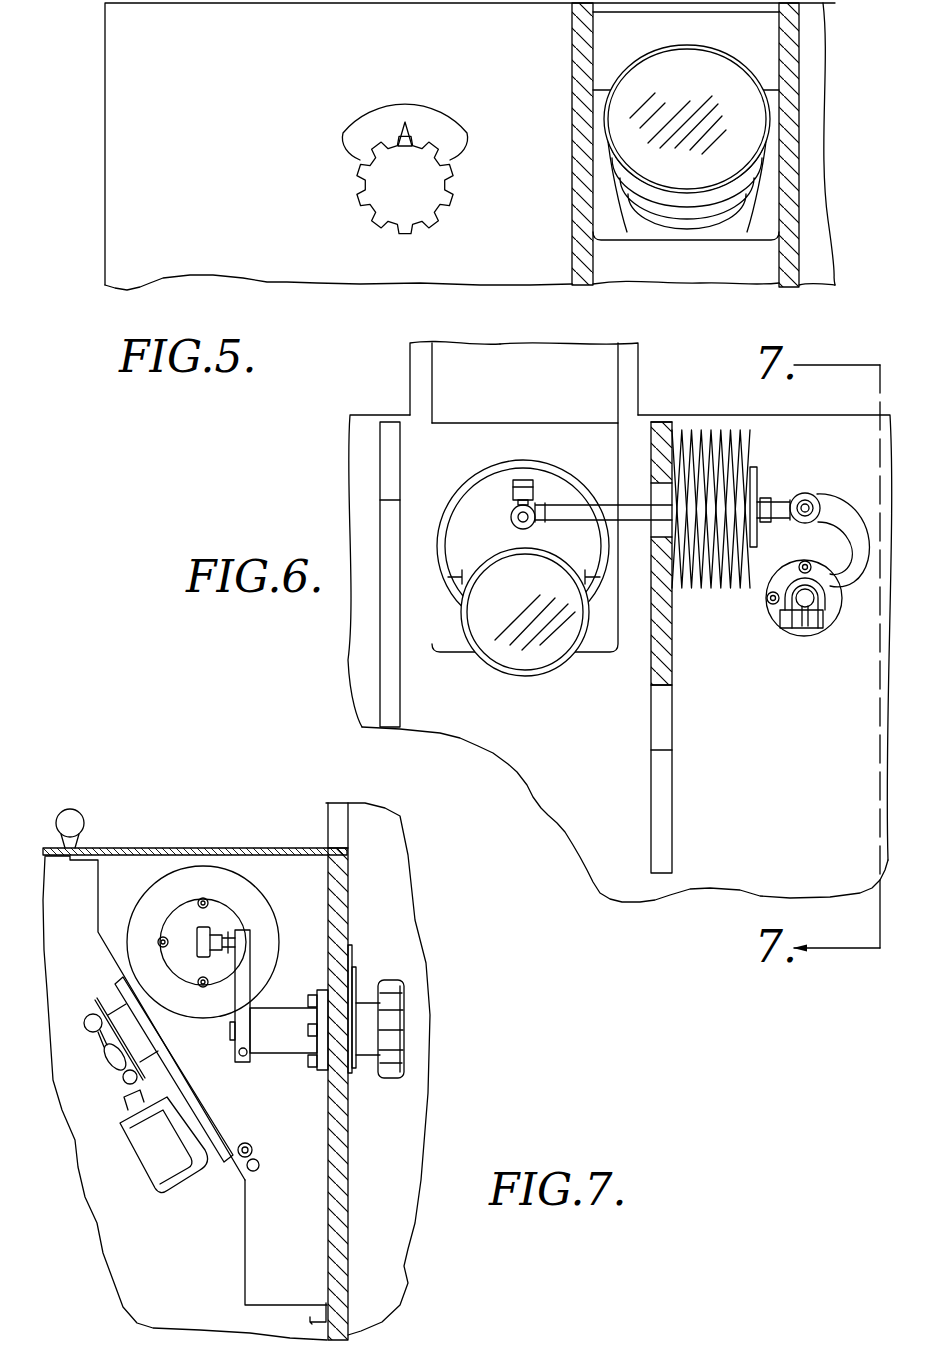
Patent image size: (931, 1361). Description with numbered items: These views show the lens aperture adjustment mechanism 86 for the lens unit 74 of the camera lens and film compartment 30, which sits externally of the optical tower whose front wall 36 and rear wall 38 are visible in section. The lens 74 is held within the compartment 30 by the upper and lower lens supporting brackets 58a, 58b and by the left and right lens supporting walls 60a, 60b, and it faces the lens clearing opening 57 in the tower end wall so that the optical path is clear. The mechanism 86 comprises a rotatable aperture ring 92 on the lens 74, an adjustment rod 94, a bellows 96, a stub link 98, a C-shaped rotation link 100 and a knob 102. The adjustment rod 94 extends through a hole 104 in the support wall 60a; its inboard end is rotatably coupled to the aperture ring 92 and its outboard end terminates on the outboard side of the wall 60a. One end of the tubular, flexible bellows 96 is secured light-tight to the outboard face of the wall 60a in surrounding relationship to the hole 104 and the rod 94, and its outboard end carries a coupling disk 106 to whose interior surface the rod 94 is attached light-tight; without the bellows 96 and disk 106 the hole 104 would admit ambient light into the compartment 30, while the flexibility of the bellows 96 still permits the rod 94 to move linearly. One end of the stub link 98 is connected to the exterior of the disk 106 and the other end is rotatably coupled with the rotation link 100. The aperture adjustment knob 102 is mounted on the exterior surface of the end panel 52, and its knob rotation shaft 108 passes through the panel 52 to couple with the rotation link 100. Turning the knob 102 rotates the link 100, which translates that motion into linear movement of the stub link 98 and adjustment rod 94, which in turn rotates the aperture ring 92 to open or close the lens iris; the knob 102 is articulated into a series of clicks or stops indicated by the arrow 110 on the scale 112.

In FIG. 5, the camera lens and film compartment 30 is at (125, 292).
In FIG. 6, the camera lens and film compartment 30 is at (355, 530).
In FIG. 7, the camera lens and film compartment 30 is at (115, 843).
In FIG. 5, the front wall 36 is at (578, 170).
In FIG. 6, the front wall 36 is at (636, 376).
In FIG. 7, the front wall 36 is at (400, 870).
In FIG. 5, the rear wall 38 is at (798, 114).
In FIG. 6, the rear wall 38 is at (420, 384).
In FIG. 5, the end panel 52 is at (257, 258).
In FIG. 6, the end panel 52 is at (598, 853).
In FIG. 7, the end panel 52 is at (345, 1248).
In FIG. 5, the lens clearing opening 57 is at (745, 233).
In FIG. 6, the lens clearing opening 57 is at (543, 430).
In FIG. 7, the upper lens supporting bracket 58a is at (97, 918).
In FIG. 7, the lower lens supporting bracket 58b is at (345, 1315).
In FIG. 6, the left lens supporting wall 60a is at (664, 803).
In FIG. 7, the left lens supporting wall 60a is at (263, 1247).
In FIG. 6, the right lens supporting wall 60b is at (386, 668).
In FIG. 5, the lens unit 74 is at (676, 60).
In FIG. 6, the lens unit 74 is at (525, 660).
In FIG. 6, the lens aperture adjustment mechanism 86 is at (633, 652).
In FIG. 7, the lens aperture adjustment mechanism 86 is at (286, 1062).
In FIG. 6, the rotatable aperture ring 92 is at (475, 532).
In FIG. 6, the adjustment rod 94 is at (607, 520).
In FIG. 6, the bellows 96 is at (748, 578).
In FIG. 7, the bellows 96 is at (245, 890).
In FIG. 6, the stub link 98 is at (793, 505).
In FIG. 6, the rotation link 100 is at (862, 588).
In FIG. 7, the rotation link 100 is at (250, 975).
In FIG. 7, the aperture adjustment knob 102 is at (398, 1048).
In FIG. 6, the hole 104 is at (648, 495).
In FIG. 6, the coupling disk 106 is at (782, 505).
In FIG. 7, the coupling disk 106 is at (178, 913).
In FIG. 6, the knob rotation shaft 108 is at (800, 634).
In FIG. 7, the knob rotation shaft 108 is at (228, 1035).
In FIG. 5, the arrow 110 is at (410, 130).
In FIG. 7, the arrow 110 is at (358, 977).
In FIG. 5, the scale 112 is at (398, 105).
In FIG. 7, the scale 112 is at (355, 950).